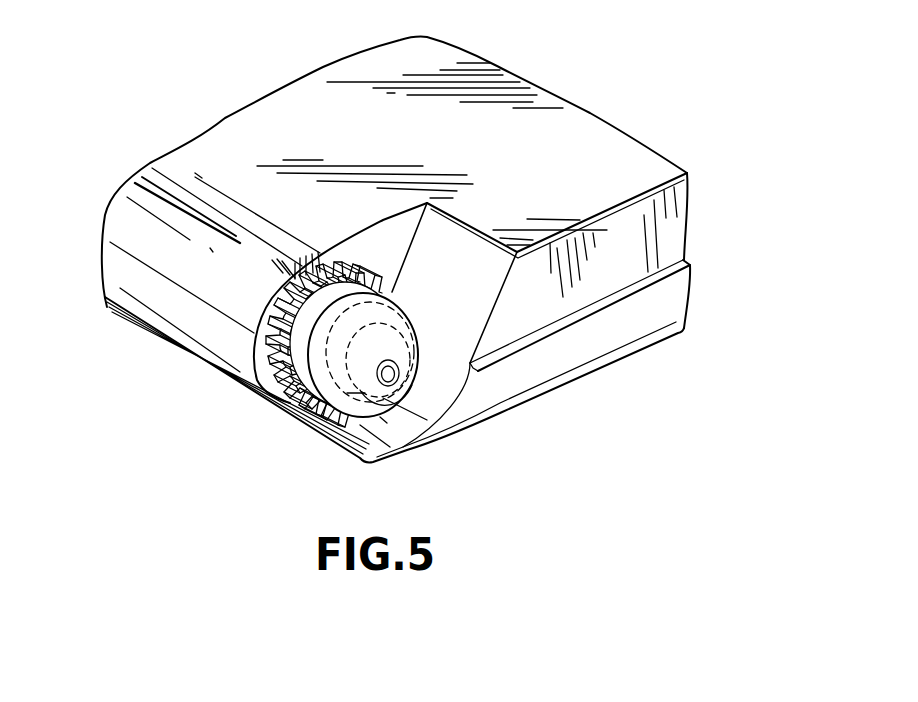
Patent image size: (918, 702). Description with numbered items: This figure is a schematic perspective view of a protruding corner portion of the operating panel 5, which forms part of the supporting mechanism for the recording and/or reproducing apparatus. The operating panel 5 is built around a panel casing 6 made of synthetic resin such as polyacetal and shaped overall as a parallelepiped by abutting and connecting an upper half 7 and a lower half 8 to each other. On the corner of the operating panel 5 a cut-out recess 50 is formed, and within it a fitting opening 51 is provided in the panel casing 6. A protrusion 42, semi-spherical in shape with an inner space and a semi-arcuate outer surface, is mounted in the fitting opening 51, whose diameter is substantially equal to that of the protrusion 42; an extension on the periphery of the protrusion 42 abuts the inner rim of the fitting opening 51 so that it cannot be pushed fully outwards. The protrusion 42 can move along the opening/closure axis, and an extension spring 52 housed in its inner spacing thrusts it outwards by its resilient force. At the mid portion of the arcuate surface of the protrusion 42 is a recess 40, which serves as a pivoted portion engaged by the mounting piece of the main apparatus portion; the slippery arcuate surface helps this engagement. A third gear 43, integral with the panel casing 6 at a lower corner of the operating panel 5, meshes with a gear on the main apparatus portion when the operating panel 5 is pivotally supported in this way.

The operating panel 5 is at (596, 101).
The panel casing 6 is at (687, 172).
The upper half 7 is at (672, 307).
The lower half 8 is at (673, 222).
The recess 40 is at (399, 365).
The protrusion 42 is at (405, 342).
The third gear 43 is at (283, 298).
The cut-out recess 50 is at (461, 238).
The fitting opening 51 is at (300, 420).
The extension spring 52 is at (410, 458).